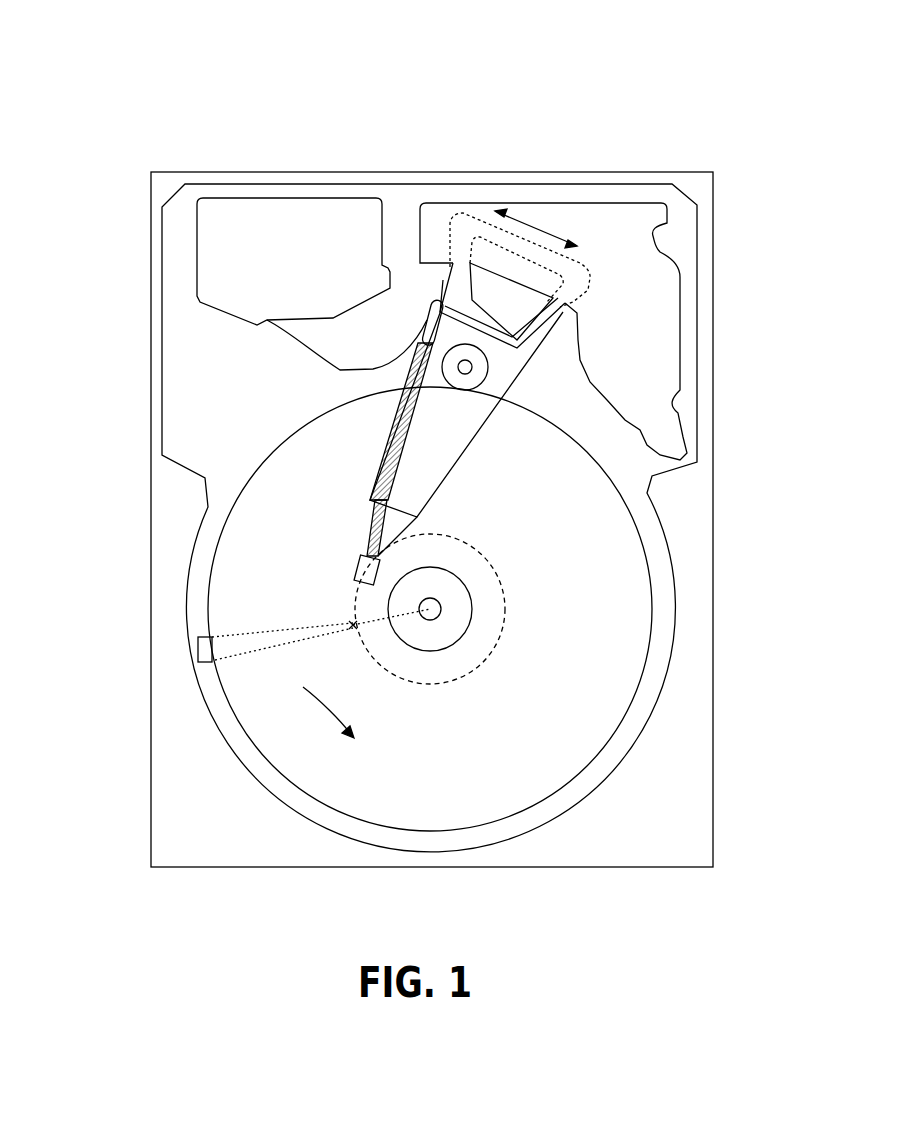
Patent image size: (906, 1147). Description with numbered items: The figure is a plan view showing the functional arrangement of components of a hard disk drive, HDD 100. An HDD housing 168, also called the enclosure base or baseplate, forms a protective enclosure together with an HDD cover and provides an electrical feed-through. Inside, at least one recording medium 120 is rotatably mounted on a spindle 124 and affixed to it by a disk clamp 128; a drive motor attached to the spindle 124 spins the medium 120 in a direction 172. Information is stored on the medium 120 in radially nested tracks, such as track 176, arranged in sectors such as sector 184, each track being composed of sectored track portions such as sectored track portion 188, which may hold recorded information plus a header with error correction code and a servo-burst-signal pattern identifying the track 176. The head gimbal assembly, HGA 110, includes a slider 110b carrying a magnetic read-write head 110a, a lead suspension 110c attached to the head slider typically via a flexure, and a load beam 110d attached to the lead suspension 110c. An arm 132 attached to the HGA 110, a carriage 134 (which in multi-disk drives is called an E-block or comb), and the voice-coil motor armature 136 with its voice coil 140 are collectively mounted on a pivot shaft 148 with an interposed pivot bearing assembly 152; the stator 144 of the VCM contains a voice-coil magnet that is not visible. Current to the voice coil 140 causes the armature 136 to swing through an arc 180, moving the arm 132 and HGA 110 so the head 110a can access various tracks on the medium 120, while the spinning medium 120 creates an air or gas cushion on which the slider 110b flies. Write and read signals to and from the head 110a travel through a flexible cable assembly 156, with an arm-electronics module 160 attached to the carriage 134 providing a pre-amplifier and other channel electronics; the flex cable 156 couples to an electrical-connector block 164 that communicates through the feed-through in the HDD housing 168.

The hard disk drive 100 is at (86, 60).
The HDD housing 168 is at (693, 185).
The electrical-connector block 164 is at (220, 262).
The flexible cable assembly 156 is at (300, 347).
The stator 144 is at (650, 283).
The armature 136 is at (443, 263).
The voice coil 140 is at (462, 268).
The arc 180 is at (537, 229).
The arm 132 is at (427, 467).
The carriage 134 is at (483, 395).
The pivot shaft 148 is at (473, 368).
The pivot bearing assembly 152 is at (482, 380).
The arm-electronics module 160 is at (421, 339).
The head gimbal assembly 110 is at (86, 440).
The magnetic read-write head 110a is at (358, 580).
The slider 110b is at (366, 553).
The lead suspension 110c is at (370, 530).
The load beam 110d is at (372, 503).
The recording medium 120 is at (590, 567).
The spindle 124 is at (441, 608).
The disk clamp 128 is at (453, 622).
The track 176 is at (497, 570).
The direction 172 is at (333, 718).
The sector 184 is at (196, 650).
The sectored track portion 188 is at (340, 620).